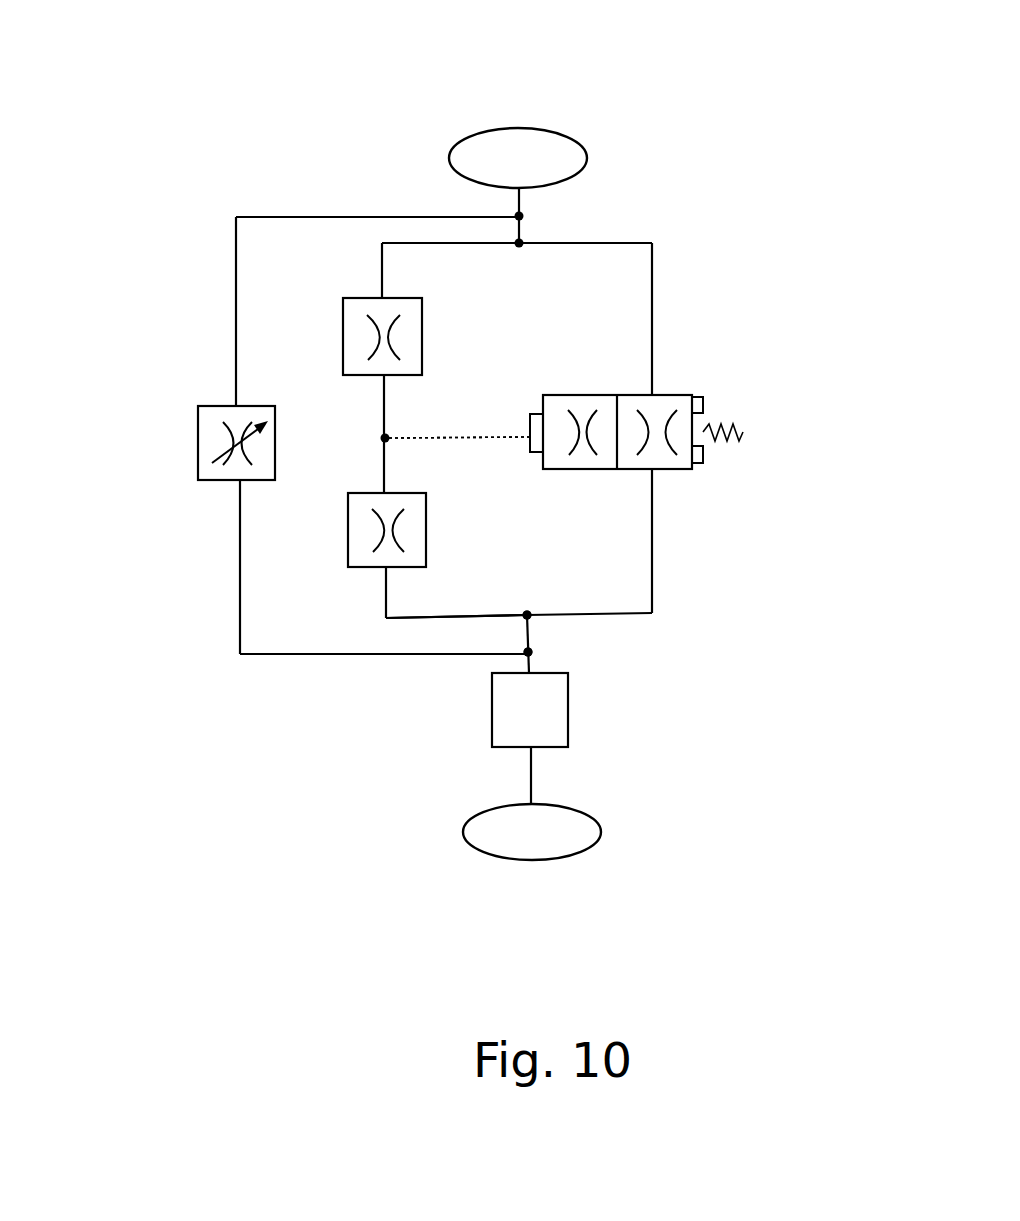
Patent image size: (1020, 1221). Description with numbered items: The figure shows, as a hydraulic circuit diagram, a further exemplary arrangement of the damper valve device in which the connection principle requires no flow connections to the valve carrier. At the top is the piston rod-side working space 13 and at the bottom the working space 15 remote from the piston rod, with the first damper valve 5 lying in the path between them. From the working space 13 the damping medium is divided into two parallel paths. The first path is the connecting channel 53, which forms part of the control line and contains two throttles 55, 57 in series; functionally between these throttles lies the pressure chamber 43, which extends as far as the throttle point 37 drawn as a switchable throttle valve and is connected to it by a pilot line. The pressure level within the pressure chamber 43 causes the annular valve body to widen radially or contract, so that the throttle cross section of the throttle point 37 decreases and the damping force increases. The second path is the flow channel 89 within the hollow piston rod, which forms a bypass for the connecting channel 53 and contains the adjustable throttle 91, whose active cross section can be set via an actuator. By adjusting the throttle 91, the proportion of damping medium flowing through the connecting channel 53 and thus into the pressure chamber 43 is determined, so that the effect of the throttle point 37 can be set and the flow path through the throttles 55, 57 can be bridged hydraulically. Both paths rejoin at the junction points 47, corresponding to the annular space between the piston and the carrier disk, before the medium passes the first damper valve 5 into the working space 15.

The piston rod-side working space 13 is at (531, 172).
The throttle 57 is at (364, 300).
The throttle 91 is at (198, 464).
The throttle 55 is at (362, 536).
The flow channel 89 is at (240, 654).
The throttle point 37 is at (669, 484).
The pressure chamber 43 is at (450, 437).
The annular space 47 is at (535, 620).
The connecting channel 53 is at (445, 620).
The first damper valve 5 is at (552, 722).
The working space remote from the piston rod 15 is at (572, 858).